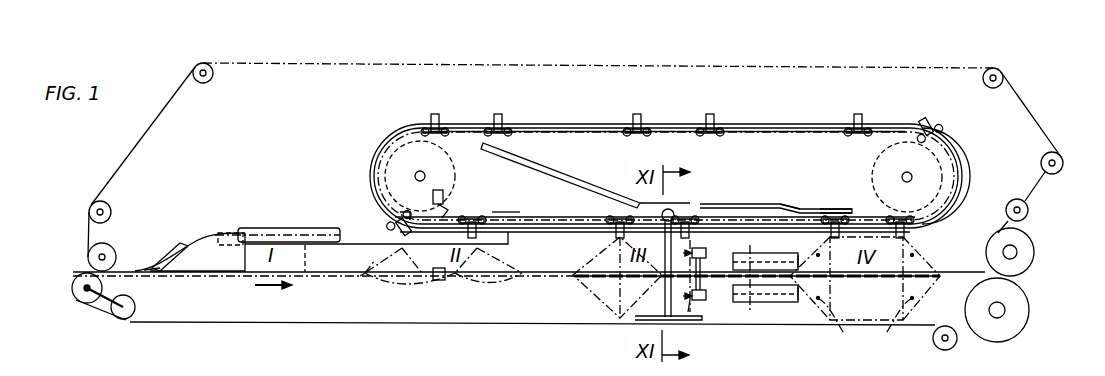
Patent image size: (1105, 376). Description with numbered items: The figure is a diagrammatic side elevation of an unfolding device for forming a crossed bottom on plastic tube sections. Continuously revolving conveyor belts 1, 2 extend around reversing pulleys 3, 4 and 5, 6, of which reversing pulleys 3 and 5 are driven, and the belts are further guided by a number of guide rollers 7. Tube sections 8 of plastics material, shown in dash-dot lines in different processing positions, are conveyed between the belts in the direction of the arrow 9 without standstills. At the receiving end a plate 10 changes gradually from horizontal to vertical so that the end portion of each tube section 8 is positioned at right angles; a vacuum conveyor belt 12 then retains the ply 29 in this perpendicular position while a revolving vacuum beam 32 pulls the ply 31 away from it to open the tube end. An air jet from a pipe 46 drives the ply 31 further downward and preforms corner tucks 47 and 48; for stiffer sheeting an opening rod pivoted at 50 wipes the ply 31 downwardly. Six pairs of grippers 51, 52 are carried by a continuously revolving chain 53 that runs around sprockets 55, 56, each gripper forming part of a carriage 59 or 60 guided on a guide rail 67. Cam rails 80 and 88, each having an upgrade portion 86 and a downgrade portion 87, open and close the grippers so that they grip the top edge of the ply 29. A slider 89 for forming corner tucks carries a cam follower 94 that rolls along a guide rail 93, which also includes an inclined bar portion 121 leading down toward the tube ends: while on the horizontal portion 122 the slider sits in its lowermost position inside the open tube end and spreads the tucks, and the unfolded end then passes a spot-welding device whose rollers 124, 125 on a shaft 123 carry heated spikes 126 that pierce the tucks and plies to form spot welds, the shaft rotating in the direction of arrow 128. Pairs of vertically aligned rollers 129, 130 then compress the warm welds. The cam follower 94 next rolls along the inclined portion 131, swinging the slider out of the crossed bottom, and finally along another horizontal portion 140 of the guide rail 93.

The conveyor belt 1 is at (298, 65).
The conveyor belt 2 is at (200, 325).
The reversing pulley 3 is at (1034, 250).
The reversing pulley 4 is at (88, 256).
The reversing pulley 5 is at (1022, 322).
The reversing pulley 6 is at (80, 300).
The guide roller 7 is at (197, 66).
The tube section 8 is at (176, 232).
The arrow 9 is at (273, 294).
The plate 10 is at (208, 232).
The vacuum conveyor belt 12 is at (352, 240).
The ply 29 is at (162, 240).
The ply 31 is at (158, 258).
The vacuum beam 32 is at (262, 228).
The pipe 46 is at (443, 195).
The corner tuck 47 is at (388, 280).
The corner tuck 48 is at (495, 268).
The pivot 50 is at (446, 278).
The gripper 51 is at (499, 114).
The gripper 52 is at (446, 108).
The chain 53 is at (548, 130).
The sprocket 55 is at (920, 168).
The sprocket 56 is at (432, 166).
The carriage 59 is at (410, 212).
The carriage 60 is at (494, 212).
The guide rail 67 is at (788, 125).
The cam rail 80 is at (966, 197).
The upgrade portion 86 is at (374, 193).
The downgrade portion 87 is at (958, 208).
The cam rail 88 is at (372, 188).
The slider 89 is at (665, 296).
The guide rail 93 is at (618, 188).
The cam follower 94 is at (676, 210).
The deflector bar 121 is at (542, 178).
The horizontal portion 122 is at (734, 204).
The shaft 123 is at (708, 300).
The roller 124 is at (712, 256).
The roller 125 is at (707, 297).
The heated spike 126 is at (690, 306).
The arrow 128 is at (878, 318).
The roller 129 is at (778, 302).
The roller 130 is at (786, 262).
The inclined portion 131 is at (792, 204).
The horizontal portion 140 is at (836, 208).